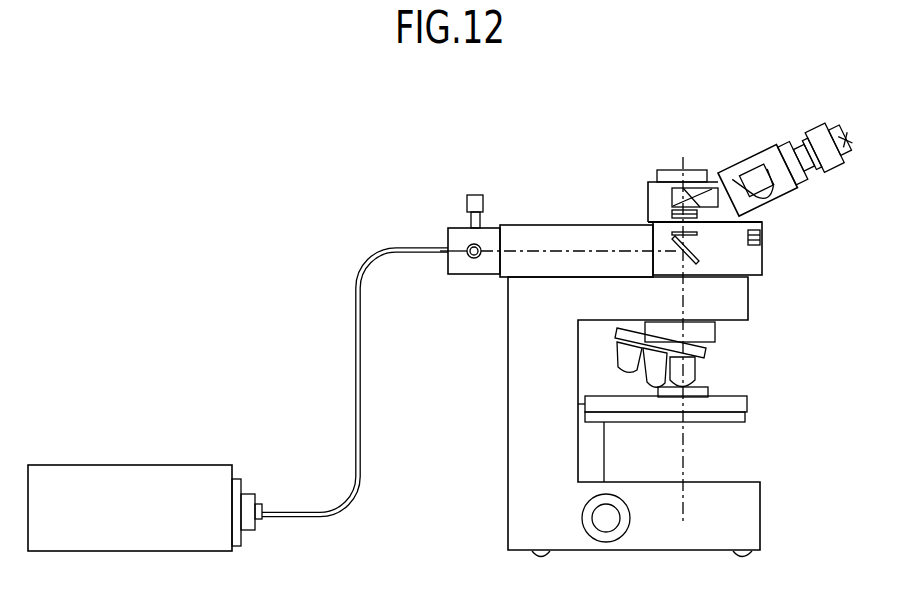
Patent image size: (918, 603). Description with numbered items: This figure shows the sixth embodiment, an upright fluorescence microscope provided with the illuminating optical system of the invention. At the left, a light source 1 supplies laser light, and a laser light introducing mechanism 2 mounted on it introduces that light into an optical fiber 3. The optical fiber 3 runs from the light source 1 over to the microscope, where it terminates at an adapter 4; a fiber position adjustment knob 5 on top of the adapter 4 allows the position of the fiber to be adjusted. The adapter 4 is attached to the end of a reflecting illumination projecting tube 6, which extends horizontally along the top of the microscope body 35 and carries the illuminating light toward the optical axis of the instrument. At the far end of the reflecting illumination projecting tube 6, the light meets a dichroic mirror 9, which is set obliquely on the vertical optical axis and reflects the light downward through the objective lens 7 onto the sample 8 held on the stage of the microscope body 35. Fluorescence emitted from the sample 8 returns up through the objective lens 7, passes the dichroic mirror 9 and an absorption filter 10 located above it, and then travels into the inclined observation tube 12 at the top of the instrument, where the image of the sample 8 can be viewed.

The light source 1 is at (128, 477).
The laser light introducing mechanism 2 is at (247, 502).
The optical fiber 3 is at (358, 411).
The adapter 4 is at (460, 266).
The fiber position adjustment knob 5 is at (470, 206).
The reflecting illumination projecting tube 6 is at (580, 228).
The objective lens 7 is at (690, 375).
The sample 8 is at (706, 392).
The dichroic mirror 9 is at (696, 262).
The absorption filter 10 is at (696, 244).
The observation tube 12 is at (748, 158).
The microscope body 35 is at (488, 525).